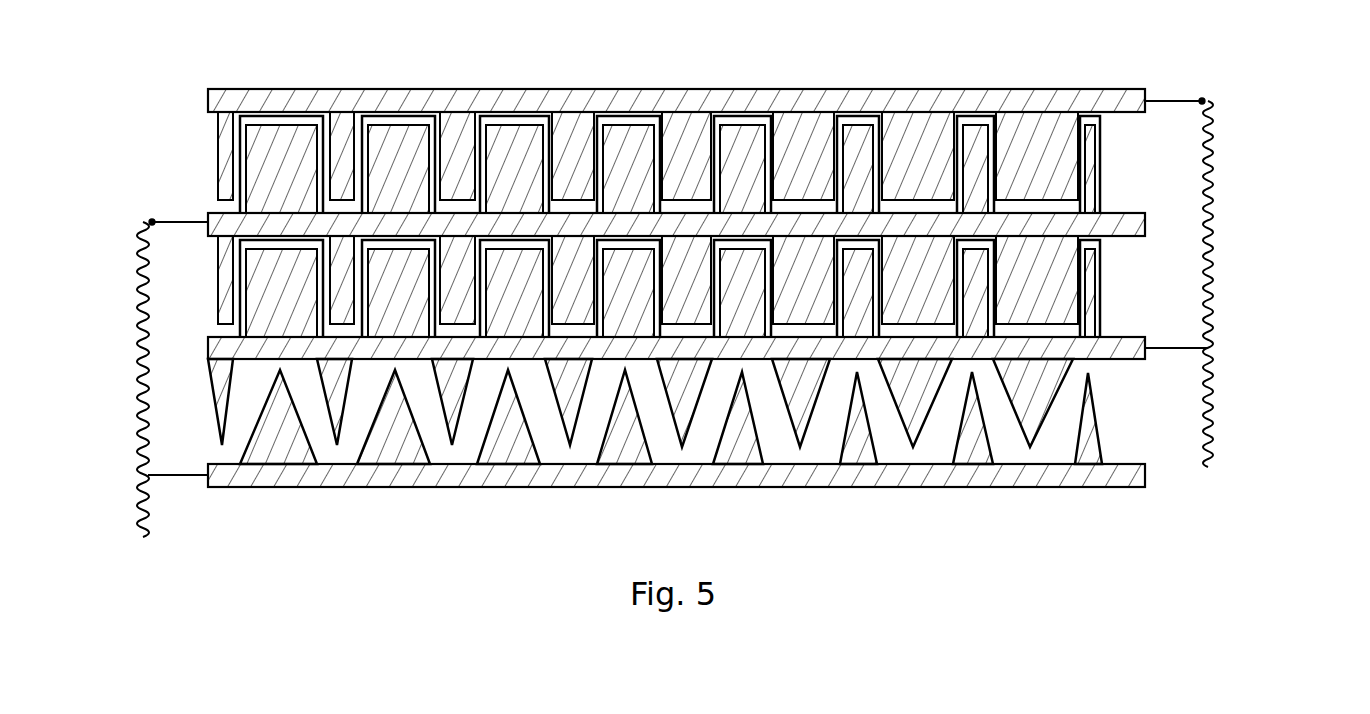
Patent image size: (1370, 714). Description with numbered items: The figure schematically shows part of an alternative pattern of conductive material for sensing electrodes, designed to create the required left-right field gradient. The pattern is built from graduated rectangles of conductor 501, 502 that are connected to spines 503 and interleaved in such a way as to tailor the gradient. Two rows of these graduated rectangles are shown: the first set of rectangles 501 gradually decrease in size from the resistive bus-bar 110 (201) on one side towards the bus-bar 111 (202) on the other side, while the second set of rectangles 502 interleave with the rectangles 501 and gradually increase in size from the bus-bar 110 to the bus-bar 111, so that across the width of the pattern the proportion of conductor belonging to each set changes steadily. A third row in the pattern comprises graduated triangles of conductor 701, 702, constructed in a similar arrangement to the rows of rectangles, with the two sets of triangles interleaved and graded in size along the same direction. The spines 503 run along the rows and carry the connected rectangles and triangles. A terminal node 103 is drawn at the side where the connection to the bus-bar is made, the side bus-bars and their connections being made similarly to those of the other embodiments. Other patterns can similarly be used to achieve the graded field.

The graduated rectangles of conductor 501 is at (293, 127).
The graduated rectangles of conductor 502 is at (357, 120).
The spines 503 is at (732, 91).
The graduated triangles of conductor 701 is at (280, 447).
The graduated triangles of conductor 702 is at (570, 440).
The terminal node 103 is at (1212, 105).
The resistive bus-bar 110 is at (153, 355).
The bus-bar 201 is at (140, 260).
The bus-bar 111 is at (1252, 284).
The bus-bar 202 is at (1218, 277).